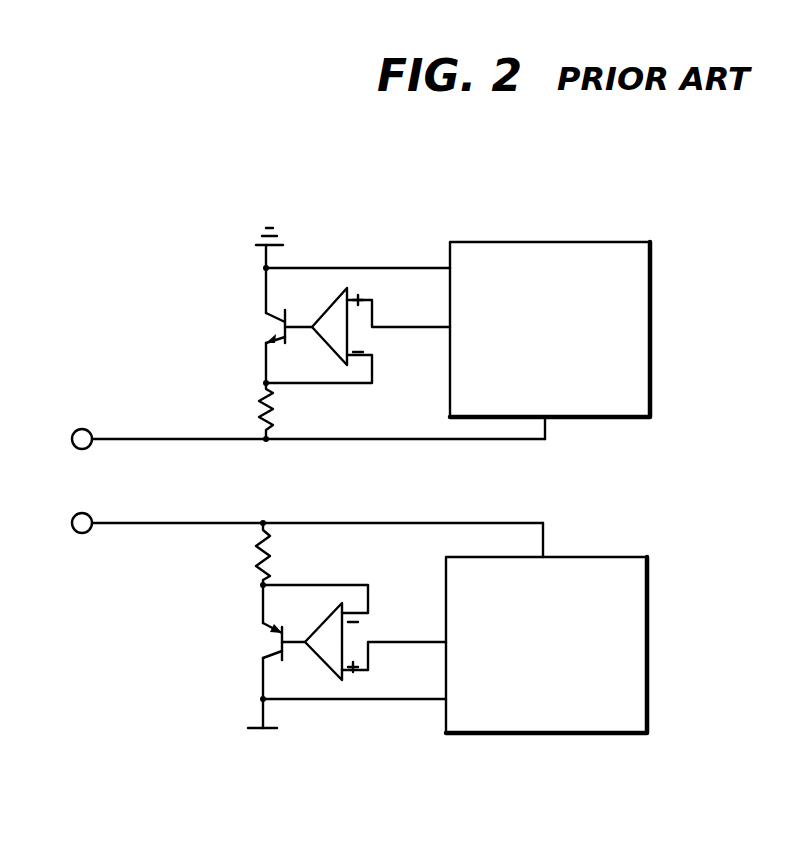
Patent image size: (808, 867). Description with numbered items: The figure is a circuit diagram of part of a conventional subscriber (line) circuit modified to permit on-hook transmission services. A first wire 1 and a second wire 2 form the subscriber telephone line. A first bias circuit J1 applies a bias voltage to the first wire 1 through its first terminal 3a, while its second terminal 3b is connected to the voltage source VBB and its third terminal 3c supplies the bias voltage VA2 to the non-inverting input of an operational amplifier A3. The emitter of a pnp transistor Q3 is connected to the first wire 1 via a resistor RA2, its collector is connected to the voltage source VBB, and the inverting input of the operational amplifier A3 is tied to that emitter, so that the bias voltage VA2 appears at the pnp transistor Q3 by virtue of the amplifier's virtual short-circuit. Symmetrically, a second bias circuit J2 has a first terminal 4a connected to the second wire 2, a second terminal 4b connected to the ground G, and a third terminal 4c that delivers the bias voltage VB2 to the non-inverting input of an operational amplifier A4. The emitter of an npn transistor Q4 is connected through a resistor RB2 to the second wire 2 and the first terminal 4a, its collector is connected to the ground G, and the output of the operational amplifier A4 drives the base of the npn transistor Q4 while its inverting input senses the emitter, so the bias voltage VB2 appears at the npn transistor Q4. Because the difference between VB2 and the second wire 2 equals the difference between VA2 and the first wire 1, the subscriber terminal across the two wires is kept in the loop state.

The ground G is at (269, 236).
The second terminal of second bias circuit 4b is at (450, 268).
The npn transistor Q4 is at (258, 325).
The operational amplifier A4 is at (320, 326).
The bias voltage VB2 is at (398, 308).
The third terminal of second bias circuit 4c is at (450, 330).
The resistor RB2 is at (226, 411).
The second wire 2 is at (83, 428).
The first terminal of second bias circuit 4a is at (549, 420).
The second bias circuit J2 is at (563, 241).
The first wire 1 is at (80, 534).
The first terminal of first bias circuit 3a is at (540, 554).
The resistor RA2 is at (223, 554).
The operational amplifier A3 is at (318, 641).
The bias voltage VA2 is at (394, 637).
The pnp transistor Q3 is at (255, 642).
The second terminal of first bias circuit 3b is at (446, 701).
The third terminal of first bias circuit 3c is at (446, 645).
The voltage source VBB is at (250, 731).
The first bias circuit J1 is at (647, 637).